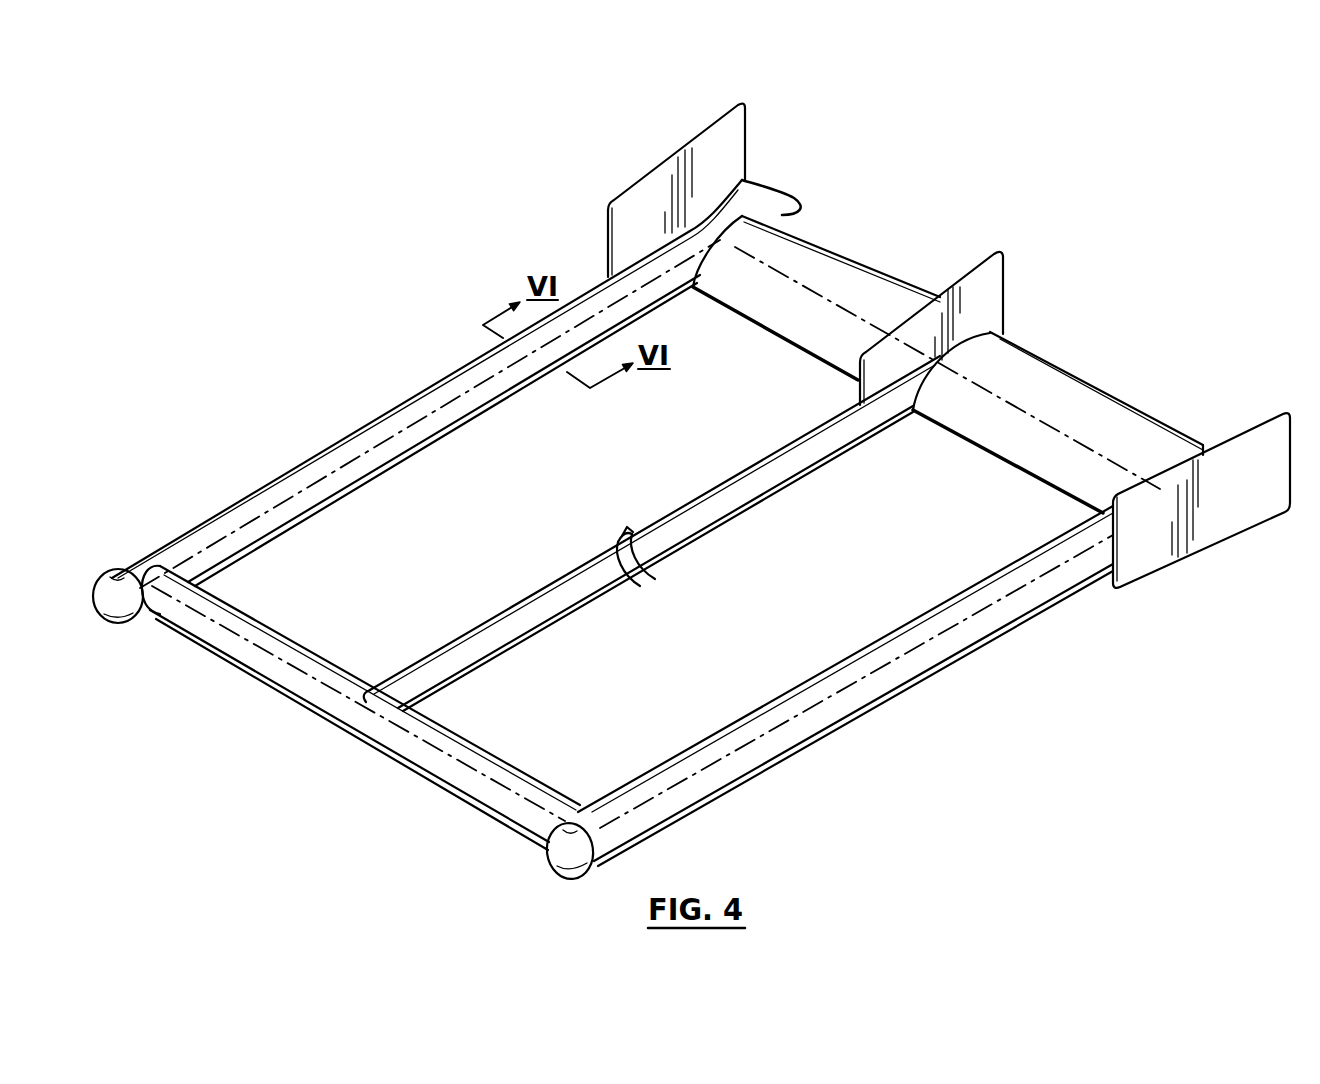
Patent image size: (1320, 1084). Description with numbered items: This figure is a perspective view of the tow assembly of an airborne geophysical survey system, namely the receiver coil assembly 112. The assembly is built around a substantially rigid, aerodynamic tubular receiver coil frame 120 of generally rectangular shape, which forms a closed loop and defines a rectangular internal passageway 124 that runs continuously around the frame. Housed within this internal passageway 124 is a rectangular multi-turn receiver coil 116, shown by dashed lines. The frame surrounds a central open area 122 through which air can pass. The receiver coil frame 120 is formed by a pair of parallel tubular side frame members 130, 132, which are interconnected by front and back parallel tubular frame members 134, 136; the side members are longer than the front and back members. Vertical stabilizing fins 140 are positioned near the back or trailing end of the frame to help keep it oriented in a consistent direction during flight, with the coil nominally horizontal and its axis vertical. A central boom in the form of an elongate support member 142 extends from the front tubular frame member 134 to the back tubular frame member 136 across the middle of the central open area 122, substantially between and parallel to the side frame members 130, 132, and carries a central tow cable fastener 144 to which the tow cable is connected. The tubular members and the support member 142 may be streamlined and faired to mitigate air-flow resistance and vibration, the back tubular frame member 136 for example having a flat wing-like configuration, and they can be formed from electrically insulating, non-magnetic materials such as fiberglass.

The receiver coil assembly 112 is at (1005, 155).
The receiver coil 116 is at (1070, 440).
The receiver coil frame 120 is at (896, 690).
The central open area 122 is at (517, 715).
The internal passageway 124 is at (1032, 383).
The tubular side frame member 130 is at (838, 666).
The tubular side frame member 132 is at (298, 460).
The front tubular frame member 134 is at (197, 628).
The back tubular frame member 136 is at (823, 265).
The vertical stabilizing fins 140 is at (640, 183).
The elongate support member 142 is at (513, 603).
The central tow cable fastener 144 is at (648, 568).